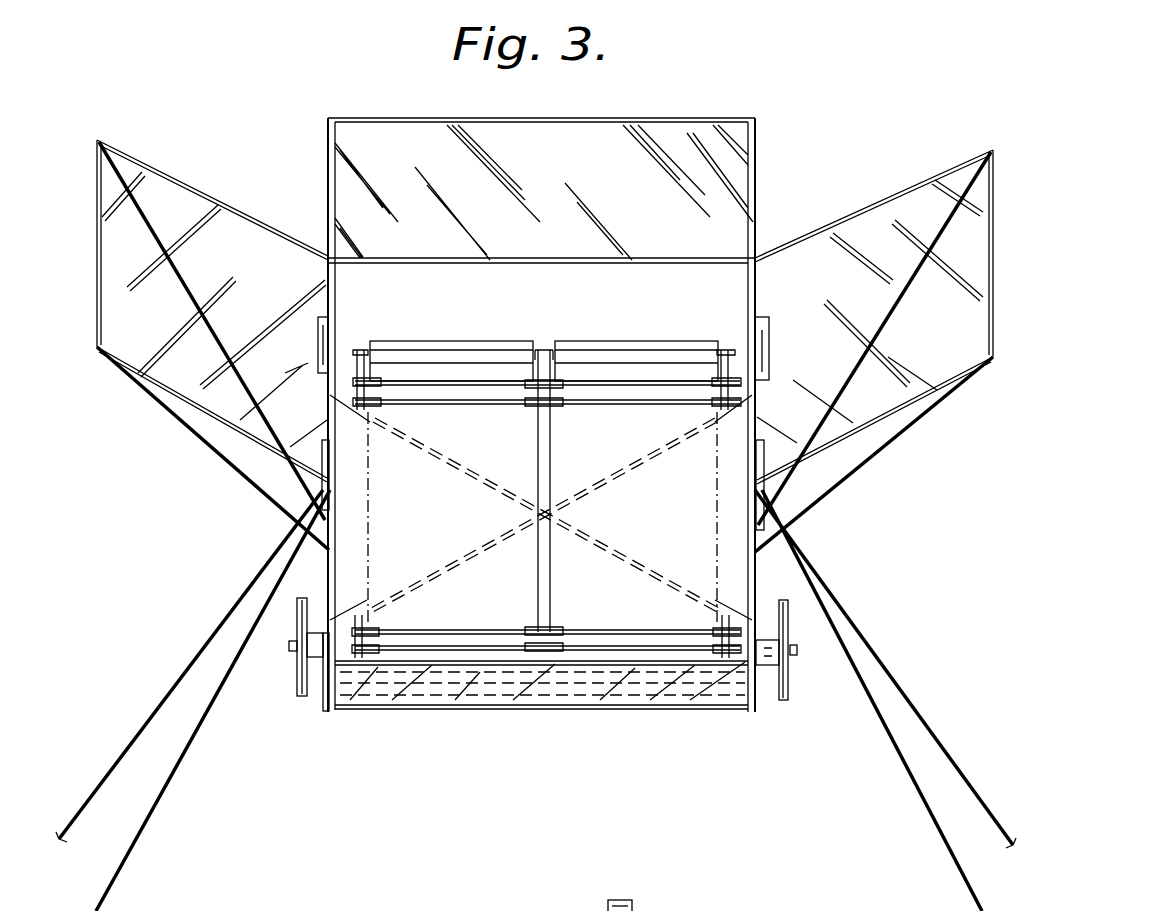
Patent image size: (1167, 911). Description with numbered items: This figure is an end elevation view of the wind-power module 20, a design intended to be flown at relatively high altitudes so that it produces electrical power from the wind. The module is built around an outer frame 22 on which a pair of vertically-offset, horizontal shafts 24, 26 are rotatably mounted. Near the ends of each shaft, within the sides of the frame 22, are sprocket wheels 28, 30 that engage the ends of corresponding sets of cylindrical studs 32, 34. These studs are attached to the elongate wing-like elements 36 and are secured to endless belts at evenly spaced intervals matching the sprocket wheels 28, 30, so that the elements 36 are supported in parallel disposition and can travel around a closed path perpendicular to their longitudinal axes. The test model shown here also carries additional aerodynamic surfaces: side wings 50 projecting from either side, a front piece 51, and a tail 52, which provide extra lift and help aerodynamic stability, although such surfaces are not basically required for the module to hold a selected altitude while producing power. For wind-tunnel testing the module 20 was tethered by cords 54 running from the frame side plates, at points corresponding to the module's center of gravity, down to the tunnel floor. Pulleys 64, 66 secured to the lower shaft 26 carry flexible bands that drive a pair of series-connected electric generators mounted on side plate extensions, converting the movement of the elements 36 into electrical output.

The wind-power module 20 is at (853, 112).
The outer frame 22 is at (326, 563).
The horizontal shaft 24 is at (750, 362).
The lower shaft 26 is at (797, 658).
The sprocket wheel 28 is at (352, 358).
The sprocket wheel 30 is at (718, 374).
The cylindrical stud 32 is at (380, 400).
The cylindrical stud 34 is at (732, 410).
The elongate wing-like element 36 is at (494, 392).
The side wing 50 is at (182, 193).
The front piece 51 is at (525, 702).
The tail 52 is at (667, 132).
The cord 54 is at (100, 797).
The pulley 64 is at (294, 688).
The pulley 66 is at (786, 712).